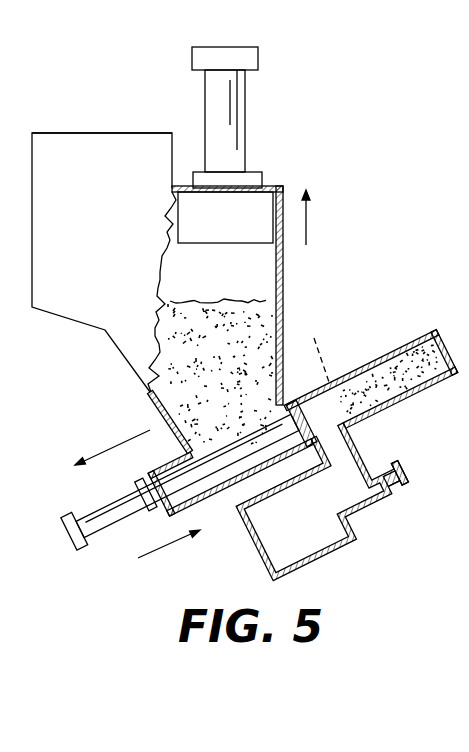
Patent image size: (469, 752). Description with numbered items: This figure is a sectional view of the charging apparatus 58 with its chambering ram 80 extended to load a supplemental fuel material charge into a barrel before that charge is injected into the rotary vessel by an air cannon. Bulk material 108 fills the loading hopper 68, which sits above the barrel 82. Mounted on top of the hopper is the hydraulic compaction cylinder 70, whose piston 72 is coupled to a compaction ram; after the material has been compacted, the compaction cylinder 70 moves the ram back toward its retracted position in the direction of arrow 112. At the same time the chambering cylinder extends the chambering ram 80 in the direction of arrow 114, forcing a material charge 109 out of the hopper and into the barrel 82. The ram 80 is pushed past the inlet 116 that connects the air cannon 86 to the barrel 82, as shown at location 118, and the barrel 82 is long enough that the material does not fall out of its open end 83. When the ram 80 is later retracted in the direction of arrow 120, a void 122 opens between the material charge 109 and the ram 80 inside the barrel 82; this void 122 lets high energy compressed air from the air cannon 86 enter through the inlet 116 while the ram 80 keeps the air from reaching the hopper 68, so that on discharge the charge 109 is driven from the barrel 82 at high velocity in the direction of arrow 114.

The charging apparatus 58 is at (44, 128).
The loading hopper 68 is at (100, 157).
The hydraulic compaction cylinder 70 is at (225, 118).
The piston 72 is at (248, 210).
The arrow 112 is at (310, 208).
The bulk material 108 is at (208, 345).
The void 122 is at (325, 401).
The location 118 is at (327, 362).
The material charge 109 is at (398, 366).
The open end 83 is at (429, 324).
The barrel 82 is at (425, 383).
The inlet 116 is at (350, 457).
The chambering ram 80 is at (315, 438).
The air cannon 86 is at (317, 543).
The arrow 120 is at (118, 445).
The arrow 114 is at (167, 545).